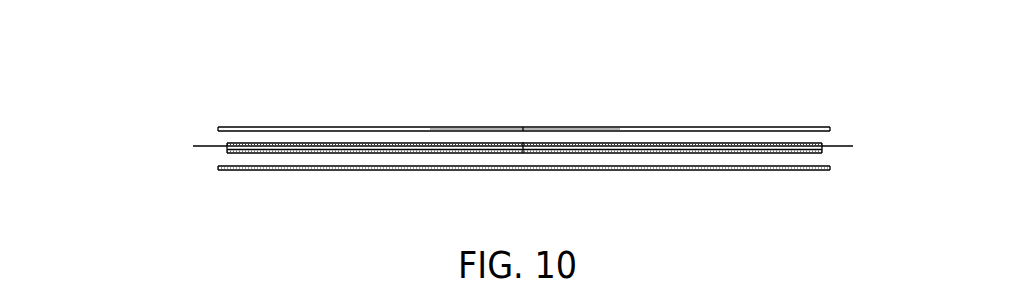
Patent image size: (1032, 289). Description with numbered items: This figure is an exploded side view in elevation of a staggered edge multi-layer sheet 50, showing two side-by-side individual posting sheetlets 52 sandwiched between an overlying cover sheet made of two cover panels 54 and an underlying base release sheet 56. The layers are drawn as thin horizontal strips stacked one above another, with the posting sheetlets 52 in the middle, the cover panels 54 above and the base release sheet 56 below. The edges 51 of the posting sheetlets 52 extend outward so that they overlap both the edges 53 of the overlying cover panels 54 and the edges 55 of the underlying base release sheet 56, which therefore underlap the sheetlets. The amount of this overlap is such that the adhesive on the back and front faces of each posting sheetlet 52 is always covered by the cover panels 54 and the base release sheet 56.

The multi-layer sheet 50 is at (166, 197).
The edges of the posting sheetlets 51 is at (195, 147).
The posting sheetlets 52 is at (447, 150).
The edges of the cover panels 53 is at (218, 127).
The cover panels 54 is at (435, 127).
The edges of the base release sheet 55 is at (218, 168).
The base release sheet 56 is at (657, 170).